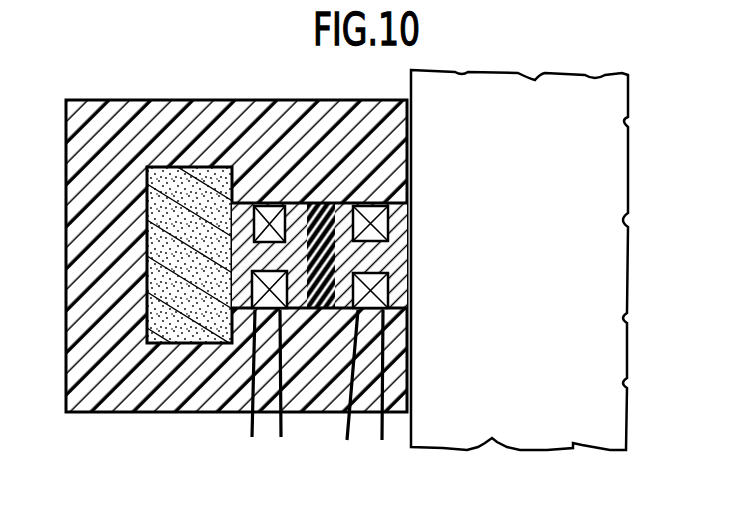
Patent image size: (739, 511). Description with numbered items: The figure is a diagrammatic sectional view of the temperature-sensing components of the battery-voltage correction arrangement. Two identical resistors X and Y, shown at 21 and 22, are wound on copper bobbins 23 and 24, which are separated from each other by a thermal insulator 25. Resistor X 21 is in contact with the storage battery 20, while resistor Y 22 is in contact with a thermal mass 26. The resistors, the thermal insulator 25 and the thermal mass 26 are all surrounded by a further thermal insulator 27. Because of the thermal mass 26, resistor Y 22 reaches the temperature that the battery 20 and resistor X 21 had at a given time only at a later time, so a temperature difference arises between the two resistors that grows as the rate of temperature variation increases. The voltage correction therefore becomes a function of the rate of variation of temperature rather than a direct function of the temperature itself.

The storage battery 20 is at (507, 413).
The resistor X 21 is at (358, 315).
The resistor Y 22 is at (277, 312).
The copper bobbin 23 is at (349, 205).
The copper bobbin 24 is at (245, 204).
The thermal insulator 25 is at (327, 310).
The thermal mass 26 is at (183, 310).
The thermal insulator 27 is at (100, 358).